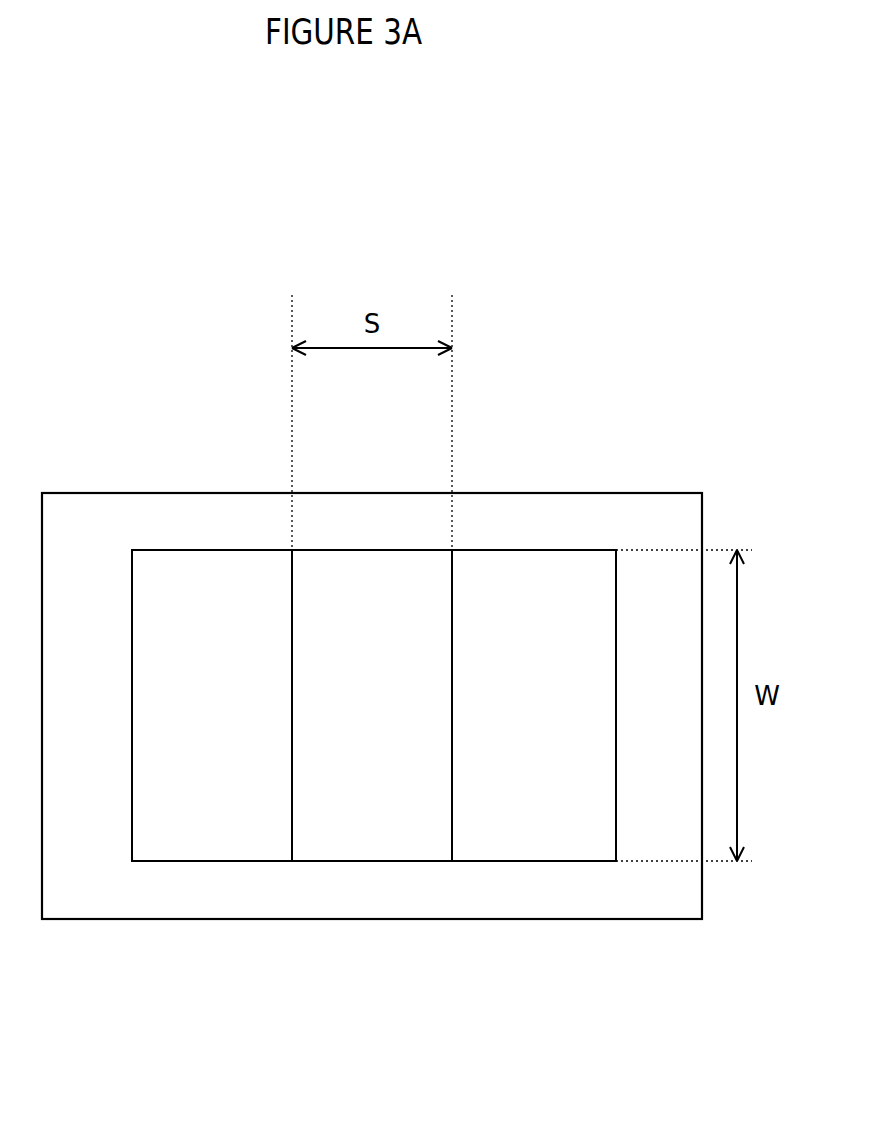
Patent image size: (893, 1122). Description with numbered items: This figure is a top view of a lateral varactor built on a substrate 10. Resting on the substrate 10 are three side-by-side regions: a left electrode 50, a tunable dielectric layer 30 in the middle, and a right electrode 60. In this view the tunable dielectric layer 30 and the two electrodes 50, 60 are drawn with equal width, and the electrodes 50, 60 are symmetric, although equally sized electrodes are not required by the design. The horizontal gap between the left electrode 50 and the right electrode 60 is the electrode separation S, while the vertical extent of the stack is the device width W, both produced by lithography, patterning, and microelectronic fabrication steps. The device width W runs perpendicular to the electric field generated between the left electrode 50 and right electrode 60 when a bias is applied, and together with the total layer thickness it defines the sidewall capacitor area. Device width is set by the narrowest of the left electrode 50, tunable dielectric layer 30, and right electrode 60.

The substrate 10 is at (96, 900).
The tunable dielectric layer 30 is at (339, 788).
The left electrode 50 is at (179, 850).
The right electrode 60 is at (600, 850).